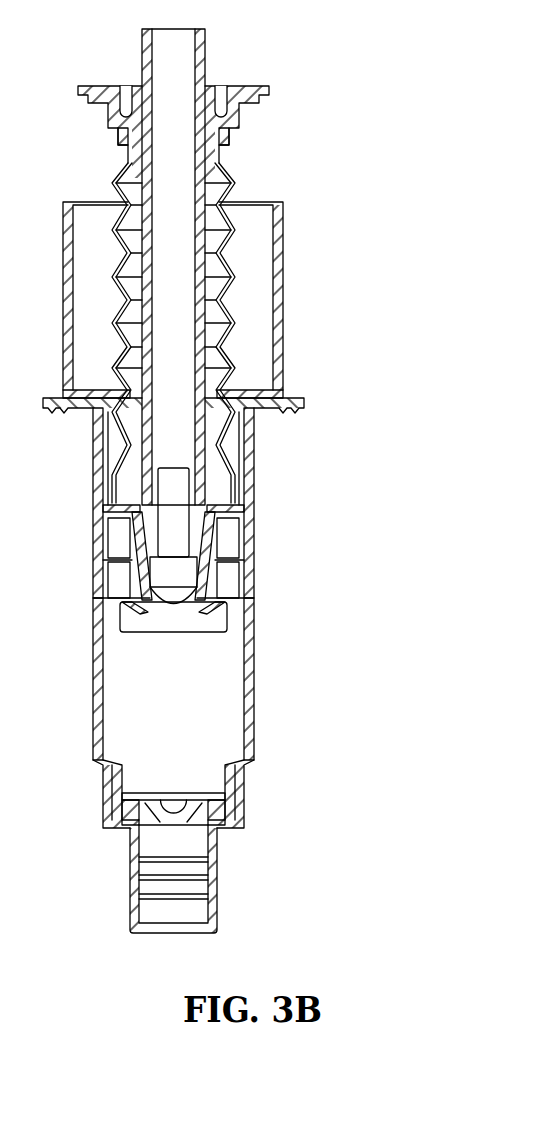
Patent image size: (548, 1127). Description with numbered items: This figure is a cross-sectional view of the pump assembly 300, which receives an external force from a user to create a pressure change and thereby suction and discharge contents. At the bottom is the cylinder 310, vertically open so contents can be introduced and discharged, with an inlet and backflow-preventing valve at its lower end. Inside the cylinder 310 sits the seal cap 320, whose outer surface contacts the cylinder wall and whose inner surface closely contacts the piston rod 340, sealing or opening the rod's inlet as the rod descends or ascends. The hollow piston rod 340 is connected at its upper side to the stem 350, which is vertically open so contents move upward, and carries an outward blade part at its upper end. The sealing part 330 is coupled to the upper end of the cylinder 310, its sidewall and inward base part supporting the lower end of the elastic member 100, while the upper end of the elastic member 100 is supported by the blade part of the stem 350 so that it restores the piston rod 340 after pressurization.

The elastic member 100 is at (116, 181).
The pump assembly 300 is at (245, 470).
The cylinder 310 is at (248, 718).
The seal cap 320 is at (245, 563).
The sealing part 330 is at (285, 307).
The piston rod 340 is at (190, 477).
The stem 350 is at (207, 52).